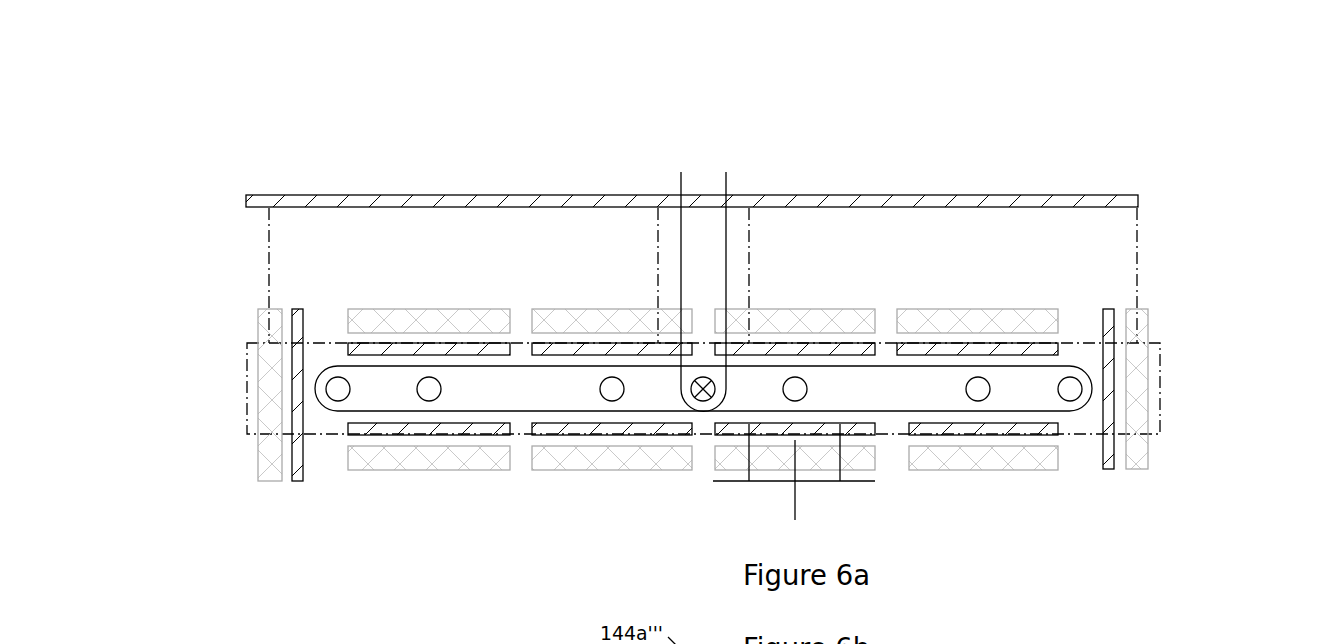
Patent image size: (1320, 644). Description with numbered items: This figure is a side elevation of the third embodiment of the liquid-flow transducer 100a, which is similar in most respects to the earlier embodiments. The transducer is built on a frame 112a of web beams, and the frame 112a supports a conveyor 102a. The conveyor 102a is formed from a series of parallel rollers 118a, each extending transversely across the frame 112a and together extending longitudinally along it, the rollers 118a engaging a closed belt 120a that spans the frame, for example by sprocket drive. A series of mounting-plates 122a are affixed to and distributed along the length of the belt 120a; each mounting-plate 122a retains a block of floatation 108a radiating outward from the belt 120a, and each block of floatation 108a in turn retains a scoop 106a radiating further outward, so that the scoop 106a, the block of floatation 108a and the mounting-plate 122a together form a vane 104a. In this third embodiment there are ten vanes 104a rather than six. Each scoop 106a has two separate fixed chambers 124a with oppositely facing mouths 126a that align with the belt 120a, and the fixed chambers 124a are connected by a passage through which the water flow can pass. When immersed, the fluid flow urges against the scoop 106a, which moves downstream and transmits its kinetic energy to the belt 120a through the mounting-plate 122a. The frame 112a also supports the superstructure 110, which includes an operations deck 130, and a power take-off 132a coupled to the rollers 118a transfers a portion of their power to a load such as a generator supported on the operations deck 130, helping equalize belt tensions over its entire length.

The electrical device assembly 100a is at (1161, 137).
The superstructure 110 is at (220, 150).
The operations deck 130 is at (432, 185).
The conveyor 102a is at (332, 327).
The frame 112a is at (227, 328).
The vane 104a is at (388, 502).
The power take-off 132a is at (703, 355).
The rollers 118a is at (1070, 389).
The belt 120a is at (1072, 422).
The mounting-plate 122a is at (1112, 481).
The block of floatation 108a is at (1153, 481).
The scoop 106a is at (795, 411).
The mouths 126a is at (684, 505).
The fixed chambers 124a is at (818, 503).